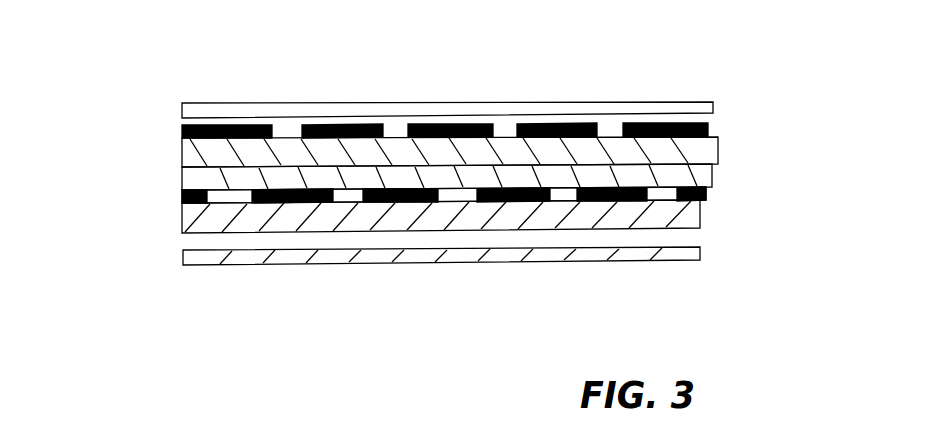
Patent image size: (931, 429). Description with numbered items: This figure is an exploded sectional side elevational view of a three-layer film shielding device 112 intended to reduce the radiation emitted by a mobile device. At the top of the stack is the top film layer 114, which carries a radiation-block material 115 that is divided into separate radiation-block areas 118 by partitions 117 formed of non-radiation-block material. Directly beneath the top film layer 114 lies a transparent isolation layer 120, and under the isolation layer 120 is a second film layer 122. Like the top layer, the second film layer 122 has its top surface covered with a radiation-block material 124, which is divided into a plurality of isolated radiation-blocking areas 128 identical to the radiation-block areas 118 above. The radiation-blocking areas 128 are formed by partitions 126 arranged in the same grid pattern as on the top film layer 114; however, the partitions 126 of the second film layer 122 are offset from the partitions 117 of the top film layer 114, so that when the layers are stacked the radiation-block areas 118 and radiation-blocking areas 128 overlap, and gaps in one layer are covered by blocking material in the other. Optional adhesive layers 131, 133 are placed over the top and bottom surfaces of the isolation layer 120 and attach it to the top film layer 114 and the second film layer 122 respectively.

The shielding device 112 is at (146, 111).
The top film layer 114 is at (718, 143).
The radiation-block material 115 is at (718, 123).
The partitions 117 is at (397, 121).
The radiation-block areas 118 is at (338, 127).
The transparent isolation layer 120 is at (166, 183).
The second film layer 122 is at (700, 215).
The radiation-block material 124 is at (712, 190).
The partitions 126 is at (240, 191).
The radiation-blocking areas 128 is at (305, 194).
The adhesive layer 131 is at (180, 167).
The adhesive layer 133 is at (180, 198).